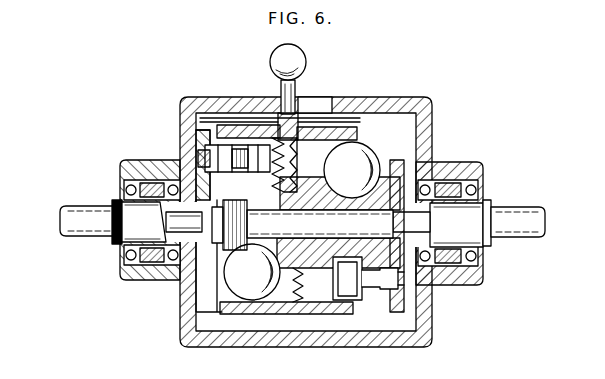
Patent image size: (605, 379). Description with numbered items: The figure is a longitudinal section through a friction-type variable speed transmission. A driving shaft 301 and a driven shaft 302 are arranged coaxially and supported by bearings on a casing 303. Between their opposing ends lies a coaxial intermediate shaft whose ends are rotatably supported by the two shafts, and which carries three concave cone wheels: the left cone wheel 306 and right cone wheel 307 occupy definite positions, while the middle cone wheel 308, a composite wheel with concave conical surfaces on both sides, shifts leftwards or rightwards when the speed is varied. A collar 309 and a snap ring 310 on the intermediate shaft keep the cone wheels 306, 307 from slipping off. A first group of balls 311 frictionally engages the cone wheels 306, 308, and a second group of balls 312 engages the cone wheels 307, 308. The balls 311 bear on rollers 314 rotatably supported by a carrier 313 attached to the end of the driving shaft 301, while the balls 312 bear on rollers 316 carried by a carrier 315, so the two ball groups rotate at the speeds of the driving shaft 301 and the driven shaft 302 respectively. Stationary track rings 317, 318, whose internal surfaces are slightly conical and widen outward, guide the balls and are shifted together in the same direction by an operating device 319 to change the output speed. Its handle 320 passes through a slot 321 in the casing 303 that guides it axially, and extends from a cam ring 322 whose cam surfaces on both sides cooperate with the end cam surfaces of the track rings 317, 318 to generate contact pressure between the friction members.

The driving shaft 301 is at (90, 213).
The driven shaft 302 is at (524, 222).
The casing 303 is at (405, 100).
The left concave cone wheel 306 is at (216, 262).
The right concave cone wheel 307 is at (397, 165).
The middle cone wheel 308 is at (303, 165).
The collar 309 is at (162, 222).
The snap ring 310 is at (436, 168).
The balls of first group 311 is at (265, 278).
The balls of second group 312 is at (367, 182).
The carrier 313 is at (205, 155).
The rollers 314 is at (254, 158).
The carrier 315 is at (385, 290).
The rollers 316 is at (337, 314).
The track ring 317 is at (233, 133).
The track ring 318 is at (343, 133).
The operating device 319 is at (306, 56).
The handle 320 is at (281, 84).
The slot 321 is at (315, 108).
The cam ring 322 is at (287, 314).